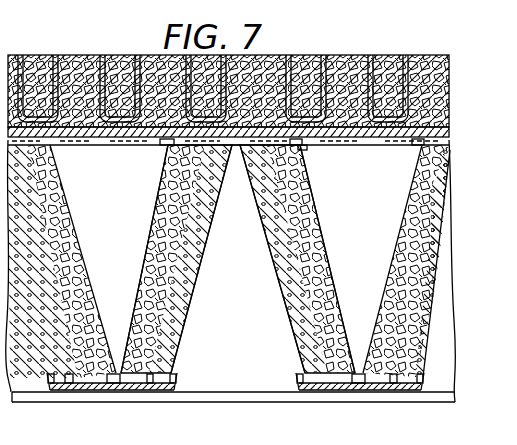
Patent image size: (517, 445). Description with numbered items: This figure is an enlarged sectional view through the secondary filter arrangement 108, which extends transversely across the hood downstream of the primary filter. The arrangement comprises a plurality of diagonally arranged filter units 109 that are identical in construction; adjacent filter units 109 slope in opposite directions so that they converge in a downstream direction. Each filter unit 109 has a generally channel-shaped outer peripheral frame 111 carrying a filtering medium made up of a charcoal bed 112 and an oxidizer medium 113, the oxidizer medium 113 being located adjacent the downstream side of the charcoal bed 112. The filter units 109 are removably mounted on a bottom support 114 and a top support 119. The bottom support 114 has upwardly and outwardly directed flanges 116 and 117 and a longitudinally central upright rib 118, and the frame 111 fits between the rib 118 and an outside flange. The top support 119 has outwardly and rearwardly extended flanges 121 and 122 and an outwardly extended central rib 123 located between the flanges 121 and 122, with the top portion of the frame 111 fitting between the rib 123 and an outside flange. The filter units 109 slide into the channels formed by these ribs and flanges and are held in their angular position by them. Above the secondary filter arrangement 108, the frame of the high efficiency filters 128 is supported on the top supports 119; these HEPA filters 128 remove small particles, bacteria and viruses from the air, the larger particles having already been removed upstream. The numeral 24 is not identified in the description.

The high efficiency filters 128 is at (126, 54).
The flange 121 is at (162, 145).
The top support 119 is at (298, 142).
The flange 122 is at (304, 151).
The secondary filter arrangement 108 is at (153, 198).
The filter unit 109 is at (149, 230).
The charcoal bed 112 is at (268, 273).
The oxidizer medium 113 is at (72, 273).
The central rib 123 is at (236, 150).
The flange 116 is at (48, 382).
The flange 117 is at (178, 379).
The bottom support 114 is at (103, 391).
The upright rib 118 is at (111, 373).
The outer peripheral frame 111 is at (141, 392).
The sheet numeral 24 is at (11, 433).